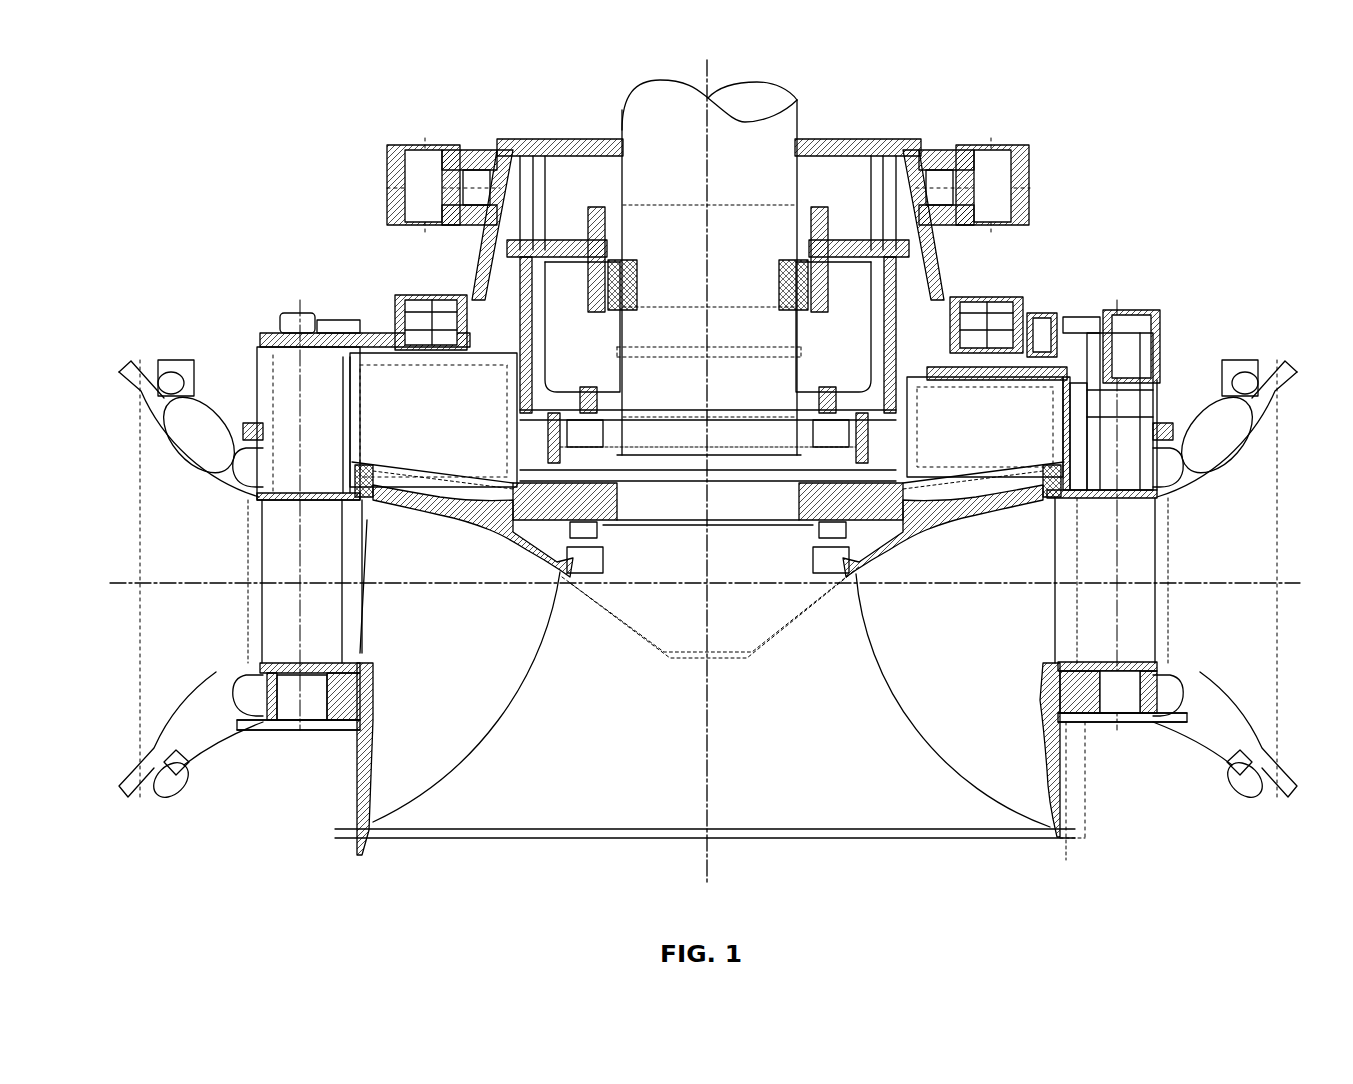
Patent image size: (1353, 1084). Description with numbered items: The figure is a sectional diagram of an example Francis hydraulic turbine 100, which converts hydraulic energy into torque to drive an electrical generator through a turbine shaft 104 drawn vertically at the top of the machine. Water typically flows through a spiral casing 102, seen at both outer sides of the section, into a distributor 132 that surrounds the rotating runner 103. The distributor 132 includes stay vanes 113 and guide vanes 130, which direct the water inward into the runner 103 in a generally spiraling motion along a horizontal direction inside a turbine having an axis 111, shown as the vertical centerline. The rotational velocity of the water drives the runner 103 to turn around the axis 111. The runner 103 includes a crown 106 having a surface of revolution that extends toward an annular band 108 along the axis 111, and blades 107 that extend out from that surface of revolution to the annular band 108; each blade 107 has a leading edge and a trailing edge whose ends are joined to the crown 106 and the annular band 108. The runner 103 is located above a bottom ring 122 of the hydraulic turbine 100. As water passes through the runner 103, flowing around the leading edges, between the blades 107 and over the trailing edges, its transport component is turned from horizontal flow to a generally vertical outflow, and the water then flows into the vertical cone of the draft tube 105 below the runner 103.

The hydraulic turbine 100 is at (912, 124).
The spiral casing 102 is at (102, 549).
The runner 103 is at (825, 769).
The turbine shaft 104 is at (773, 171).
The draft tube 105 is at (825, 877).
The crown 106 is at (510, 522).
The blades 107 is at (437, 686).
The annular band 108 is at (1063, 778).
The axis 111 is at (707, 73).
The stay vanes 113 is at (253, 618).
The bottom ring 122 is at (1073, 839).
The guide vanes 130 is at (335, 561).
The distributor 132 is at (218, 632).